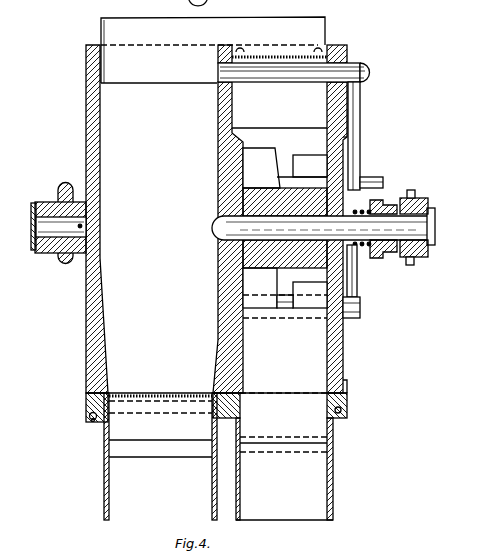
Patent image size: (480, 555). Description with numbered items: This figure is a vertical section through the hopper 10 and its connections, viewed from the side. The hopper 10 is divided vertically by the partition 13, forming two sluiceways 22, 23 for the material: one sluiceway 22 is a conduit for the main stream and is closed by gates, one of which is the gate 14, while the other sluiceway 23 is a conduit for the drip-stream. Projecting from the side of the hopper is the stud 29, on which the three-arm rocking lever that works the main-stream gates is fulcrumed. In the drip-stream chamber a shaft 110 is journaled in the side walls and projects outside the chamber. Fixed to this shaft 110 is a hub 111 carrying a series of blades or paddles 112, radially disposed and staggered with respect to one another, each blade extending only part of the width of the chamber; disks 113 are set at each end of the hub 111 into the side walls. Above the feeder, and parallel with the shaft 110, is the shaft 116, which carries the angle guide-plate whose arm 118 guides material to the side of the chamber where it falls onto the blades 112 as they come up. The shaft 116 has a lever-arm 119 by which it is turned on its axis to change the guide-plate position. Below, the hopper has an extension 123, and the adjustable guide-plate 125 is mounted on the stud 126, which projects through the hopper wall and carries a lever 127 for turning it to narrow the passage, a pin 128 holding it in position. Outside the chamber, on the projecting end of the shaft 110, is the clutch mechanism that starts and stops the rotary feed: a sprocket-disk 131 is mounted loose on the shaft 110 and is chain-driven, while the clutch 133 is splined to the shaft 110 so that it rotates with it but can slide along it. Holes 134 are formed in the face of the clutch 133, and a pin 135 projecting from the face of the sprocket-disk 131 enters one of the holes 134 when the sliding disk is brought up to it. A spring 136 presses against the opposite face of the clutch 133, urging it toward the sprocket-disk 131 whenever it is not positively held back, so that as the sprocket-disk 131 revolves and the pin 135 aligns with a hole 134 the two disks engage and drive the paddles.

The hopper 10 is at (86, 131).
The partition 13 is at (217, 145).
The gate 14 is at (147, 450).
The sluiceway 22 is at (160, 456).
The sluiceway 23 is at (273, 456).
The stud 29 is at (63, 229).
The shaft 110 is at (222, 230).
The hub 111 is at (218, 204).
The blades or paddles 112 is at (262, 165).
The disks 113 is at (243, 170).
The shaft 116 is at (346, 76).
The arm 118 is at (310, 121).
The lever-arm 119 is at (357, 104).
The extension of the hopper 123 is at (333, 472).
The guide-plate 125 is at (312, 444).
The stud 126 is at (352, 318).
The lever 127 is at (352, 284).
The pin 128 is at (363, 181).
The sprocket-disk 131 is at (414, 198).
The clutch 133 is at (376, 257).
The holes 134 is at (411, 193).
The pin 135 is at (436, 211).
The spring 136 is at (362, 247).